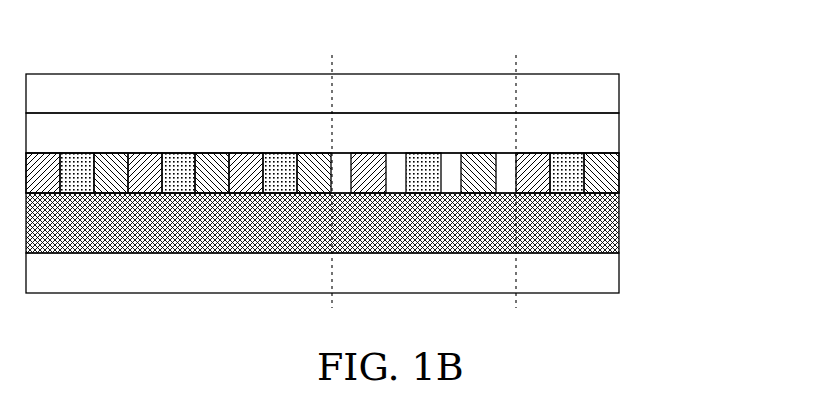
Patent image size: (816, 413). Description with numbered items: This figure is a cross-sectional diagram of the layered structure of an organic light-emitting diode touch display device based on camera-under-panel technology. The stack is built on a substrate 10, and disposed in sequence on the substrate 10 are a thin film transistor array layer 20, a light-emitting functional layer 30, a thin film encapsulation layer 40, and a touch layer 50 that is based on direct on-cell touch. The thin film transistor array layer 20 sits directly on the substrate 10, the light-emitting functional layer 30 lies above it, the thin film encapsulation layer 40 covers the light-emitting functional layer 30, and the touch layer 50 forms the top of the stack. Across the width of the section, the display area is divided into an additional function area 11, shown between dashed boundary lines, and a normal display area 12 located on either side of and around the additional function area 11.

The substrate 10 is at (620, 277).
The thin film transistor array layer 20 is at (620, 230).
The light-emitting functional layer 30 is at (620, 172).
The thin film encapsulation layer 40 is at (620, 133).
The touch layer 50 is at (620, 91).
The additional function area 11 is at (423, 39).
The normal display area 12 is at (201, 39).